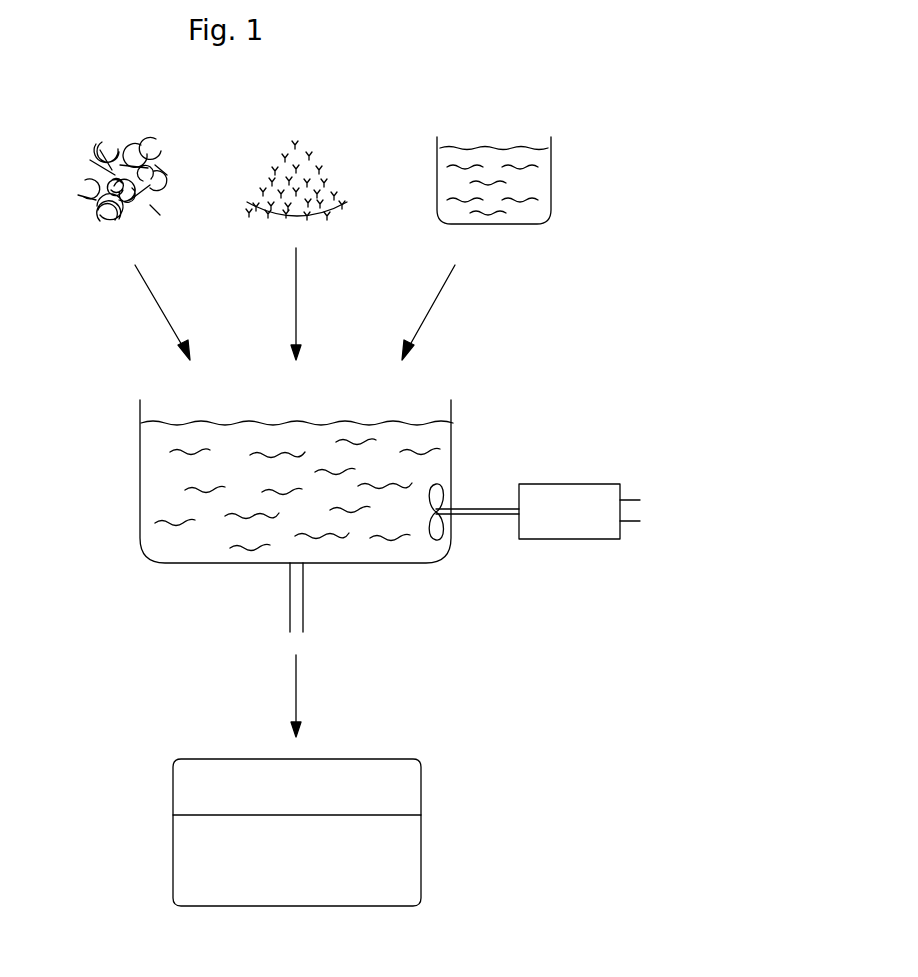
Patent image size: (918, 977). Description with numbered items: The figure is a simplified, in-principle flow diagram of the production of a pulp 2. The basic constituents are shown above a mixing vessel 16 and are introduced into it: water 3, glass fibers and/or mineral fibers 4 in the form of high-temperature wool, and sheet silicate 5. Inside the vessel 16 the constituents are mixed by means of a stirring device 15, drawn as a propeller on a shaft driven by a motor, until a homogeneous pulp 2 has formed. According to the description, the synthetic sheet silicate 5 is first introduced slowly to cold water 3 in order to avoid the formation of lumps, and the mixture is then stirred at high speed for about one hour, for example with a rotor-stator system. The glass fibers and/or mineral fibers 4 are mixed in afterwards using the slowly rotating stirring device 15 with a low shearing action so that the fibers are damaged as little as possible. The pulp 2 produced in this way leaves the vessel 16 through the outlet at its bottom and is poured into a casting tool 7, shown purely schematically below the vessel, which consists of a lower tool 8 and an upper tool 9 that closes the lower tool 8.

The pulp 2 is at (175, 479).
The water 3 is at (488, 155).
The glass fibers and/or mineral fibers 4 is at (106, 138).
The sheet silicate 5 is at (298, 138).
The casting tool 7 is at (363, 830).
The lower tool 8 is at (400, 870).
The upper tool 9 is at (405, 795).
The stirring device 15 is at (522, 468).
The vessel 16 is at (142, 544).